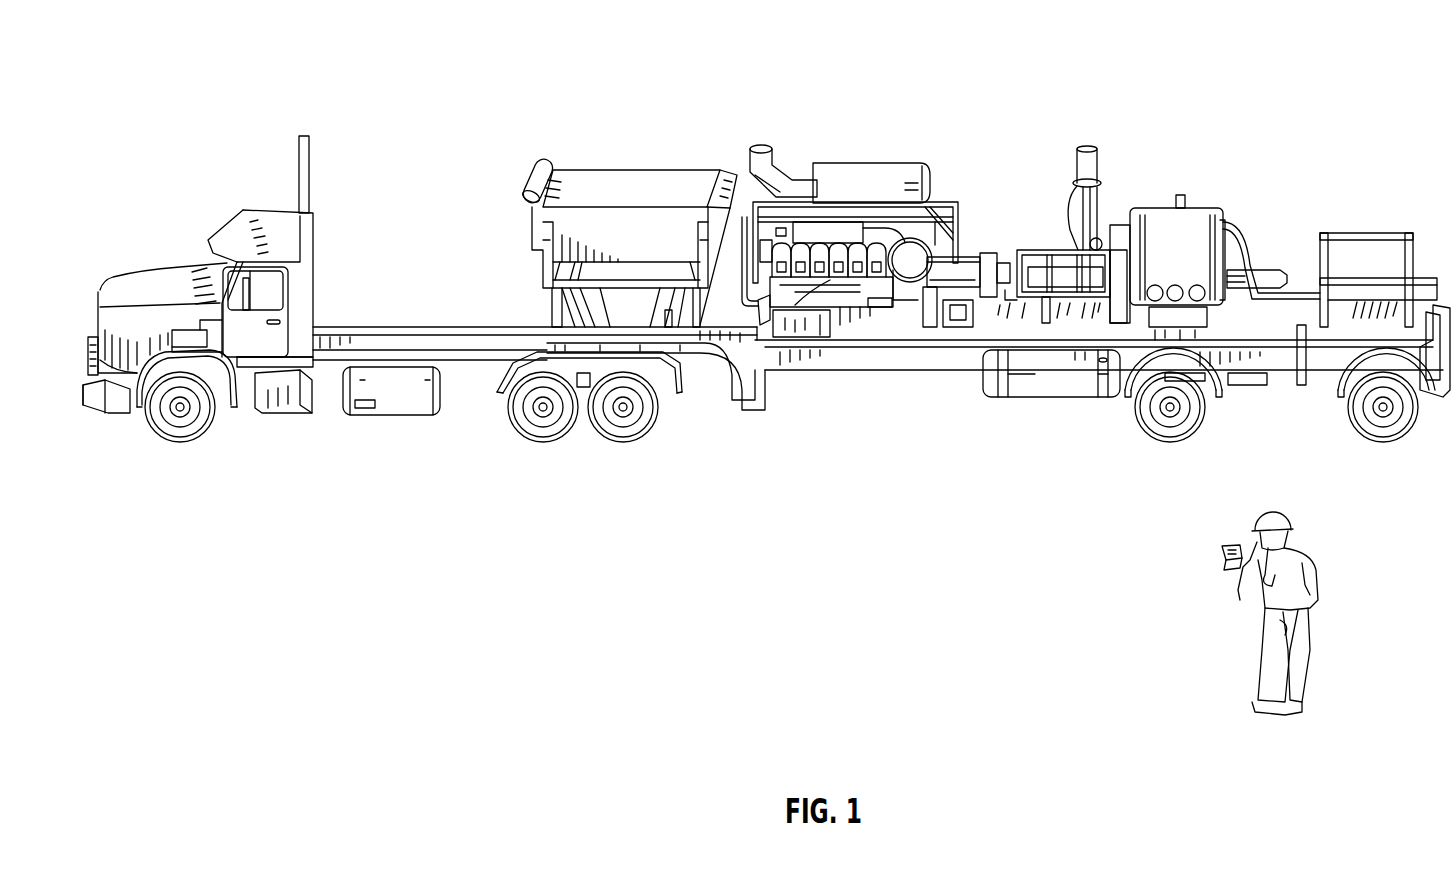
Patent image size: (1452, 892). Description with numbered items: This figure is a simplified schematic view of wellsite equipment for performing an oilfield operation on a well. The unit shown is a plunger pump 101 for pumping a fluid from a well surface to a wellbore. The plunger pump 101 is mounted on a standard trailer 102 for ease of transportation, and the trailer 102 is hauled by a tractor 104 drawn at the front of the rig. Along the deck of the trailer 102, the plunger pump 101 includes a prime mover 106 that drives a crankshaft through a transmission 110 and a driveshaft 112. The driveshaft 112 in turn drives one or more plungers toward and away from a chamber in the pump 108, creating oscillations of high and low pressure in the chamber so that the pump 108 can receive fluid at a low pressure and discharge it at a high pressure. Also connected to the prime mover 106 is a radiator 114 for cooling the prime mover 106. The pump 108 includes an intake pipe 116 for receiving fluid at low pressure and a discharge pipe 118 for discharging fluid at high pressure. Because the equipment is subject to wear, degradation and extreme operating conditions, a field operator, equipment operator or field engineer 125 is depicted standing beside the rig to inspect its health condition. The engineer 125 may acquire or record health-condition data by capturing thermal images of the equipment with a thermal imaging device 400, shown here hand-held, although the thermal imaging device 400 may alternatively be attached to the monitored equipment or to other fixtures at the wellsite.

The plunger pump 101 is at (181, 86).
The trailer 102 is at (883, 374).
The tractor 104 is at (284, 211).
The prime mover 106 is at (828, 222).
The pump 108 is at (1142, 208).
The transmission 110 is at (967, 254).
The driveshaft 112 is at (1031, 250).
The radiator 114 is at (641, 170).
The intake pipe 116 is at (1353, 290).
The discharge pipe 118 is at (1268, 268).
The field engineer 125 is at (1313, 557).
The thermal imaging device 400 is at (1230, 540).